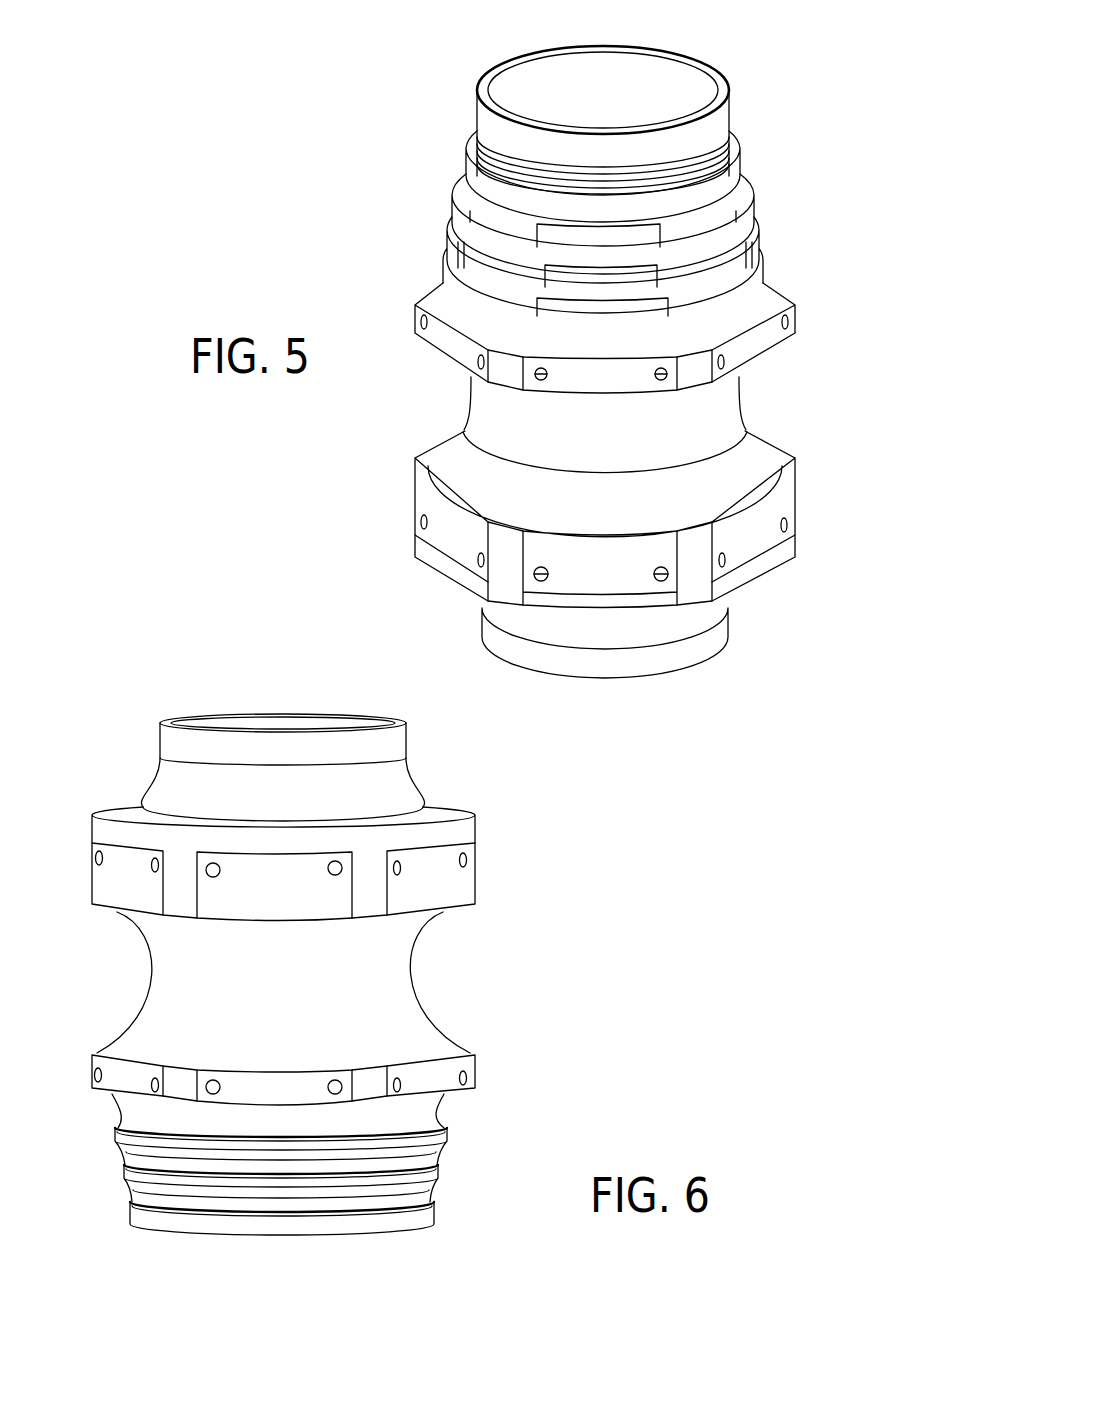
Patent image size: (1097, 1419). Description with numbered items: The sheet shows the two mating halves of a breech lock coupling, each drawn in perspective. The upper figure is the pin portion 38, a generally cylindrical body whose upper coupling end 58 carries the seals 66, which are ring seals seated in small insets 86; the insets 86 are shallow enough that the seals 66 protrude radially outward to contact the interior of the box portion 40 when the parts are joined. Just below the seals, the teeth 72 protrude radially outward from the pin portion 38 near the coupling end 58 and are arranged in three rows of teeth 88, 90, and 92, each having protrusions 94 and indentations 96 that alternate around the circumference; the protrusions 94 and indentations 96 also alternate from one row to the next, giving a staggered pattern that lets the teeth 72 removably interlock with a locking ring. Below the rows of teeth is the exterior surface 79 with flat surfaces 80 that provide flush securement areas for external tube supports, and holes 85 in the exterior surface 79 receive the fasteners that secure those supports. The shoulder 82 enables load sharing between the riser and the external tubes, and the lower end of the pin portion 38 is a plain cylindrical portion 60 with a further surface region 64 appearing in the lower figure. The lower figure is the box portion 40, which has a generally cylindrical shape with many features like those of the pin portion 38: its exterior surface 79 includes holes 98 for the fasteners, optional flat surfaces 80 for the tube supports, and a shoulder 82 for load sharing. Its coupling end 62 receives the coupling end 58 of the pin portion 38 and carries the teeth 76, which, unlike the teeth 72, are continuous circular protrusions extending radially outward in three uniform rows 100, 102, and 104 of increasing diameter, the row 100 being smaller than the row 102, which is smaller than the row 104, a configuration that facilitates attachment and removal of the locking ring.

In FIG. 5, the pin portion 38 is at (418, 82).
In FIG. 5, the coupling end 58 is at (722, 56).
In FIG. 5, the insets 86 is at (645, 160).
In FIG. 5, the seals 66 is at (725, 152).
In FIG. 5, the teeth 72 is at (748, 188).
In FIG. 5, the row of teeth 88 is at (438, 172).
In FIG. 5, the row of teeth 90 is at (428, 212).
In FIG. 5, the row of teeth 92 is at (424, 254).
In FIG. 5, the protrusions 94 is at (628, 262).
In FIG. 5, the indentations 96 is at (565, 235).
In FIG. 5, the exterior surface 79 is at (806, 530).
In FIG. 6, the exterior surface 79 is at (87, 862).
In FIG. 5, the shoulder 82 is at (768, 578).
In FIG. 6, the shoulder 82 is at (452, 834).
In FIG. 5, the flat surfaces 80 is at (445, 345).
In FIG. 6, the flat surfaces 80 is at (460, 906).
In FIG. 5, the holes 85 is at (541, 382).
In FIG. 5, the lower cylindrical portion 60 is at (725, 620).
In FIG. 6, the box portion 40 is at (104, 668).
In FIG. 6, the neck 64 is at (410, 736).
In FIG. 6, the holes 98 is at (328, 870).
In FIG. 6, the teeth 76 is at (448, 1150).
In FIG. 6, the row 104 is at (116, 1131).
In FIG. 6, the row 102 is at (123, 1170).
In FIG. 6, the row 100 is at (130, 1216).
In FIG. 6, the coupling end 62 is at (412, 1242).